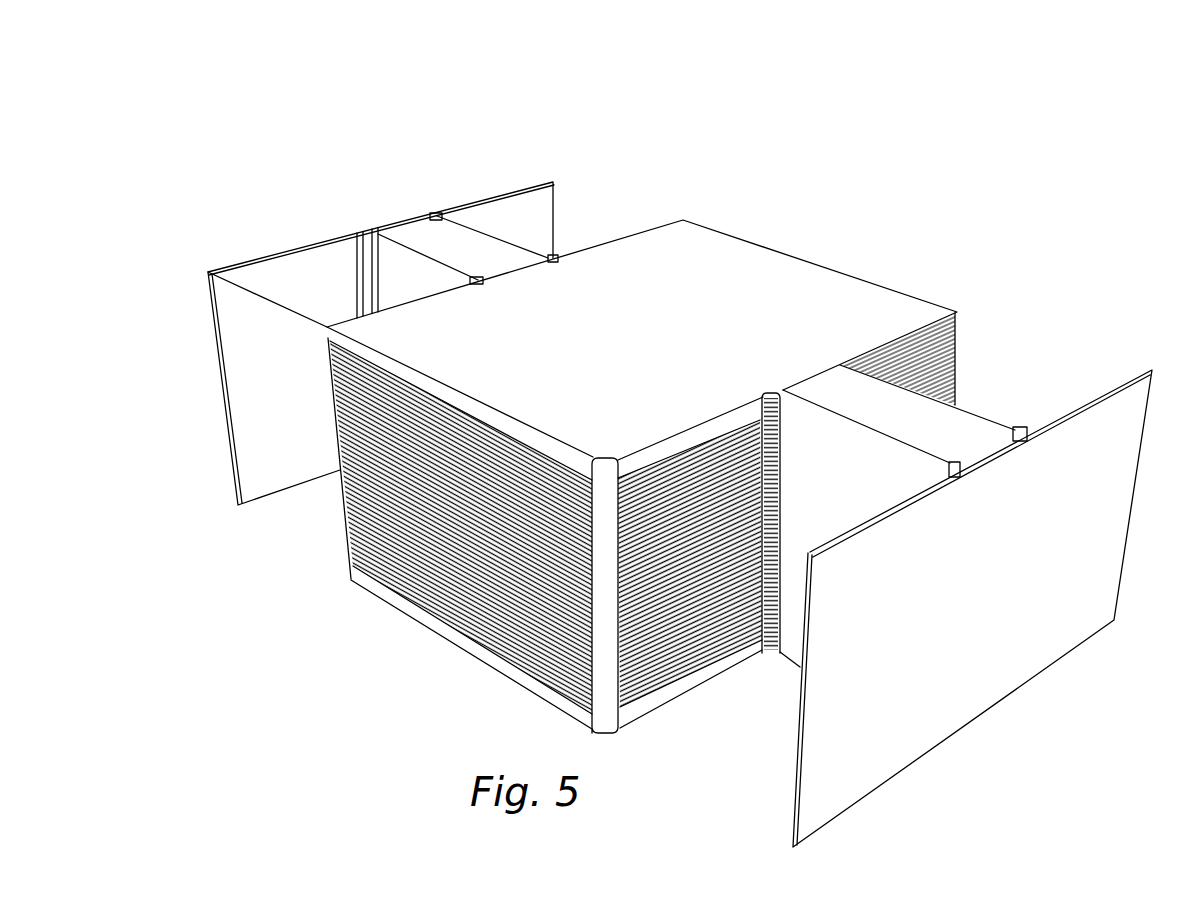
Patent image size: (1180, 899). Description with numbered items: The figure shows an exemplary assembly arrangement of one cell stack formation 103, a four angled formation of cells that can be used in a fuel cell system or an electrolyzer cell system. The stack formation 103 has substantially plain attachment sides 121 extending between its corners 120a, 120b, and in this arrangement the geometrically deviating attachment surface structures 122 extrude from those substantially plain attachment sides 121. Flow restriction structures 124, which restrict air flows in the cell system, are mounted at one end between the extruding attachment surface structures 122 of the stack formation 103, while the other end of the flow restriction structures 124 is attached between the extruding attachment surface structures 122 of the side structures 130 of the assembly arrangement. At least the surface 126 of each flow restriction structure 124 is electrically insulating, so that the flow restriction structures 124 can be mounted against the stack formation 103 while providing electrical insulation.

The cell stack formation 103 is at (417, 600).
The corner of the four angled stack formation 120a is at (327, 325).
The corner of the four angled stack formation 120b is at (685, 217).
The substantially plain attachment side 121 is at (656, 683).
The geometrically deviating attachment surface structure 122 is at (363, 232).
The flow restriction structure 124 is at (412, 237).
The surface of the flow restriction structure 126 is at (417, 218).
The side structure 130 is at (255, 483).